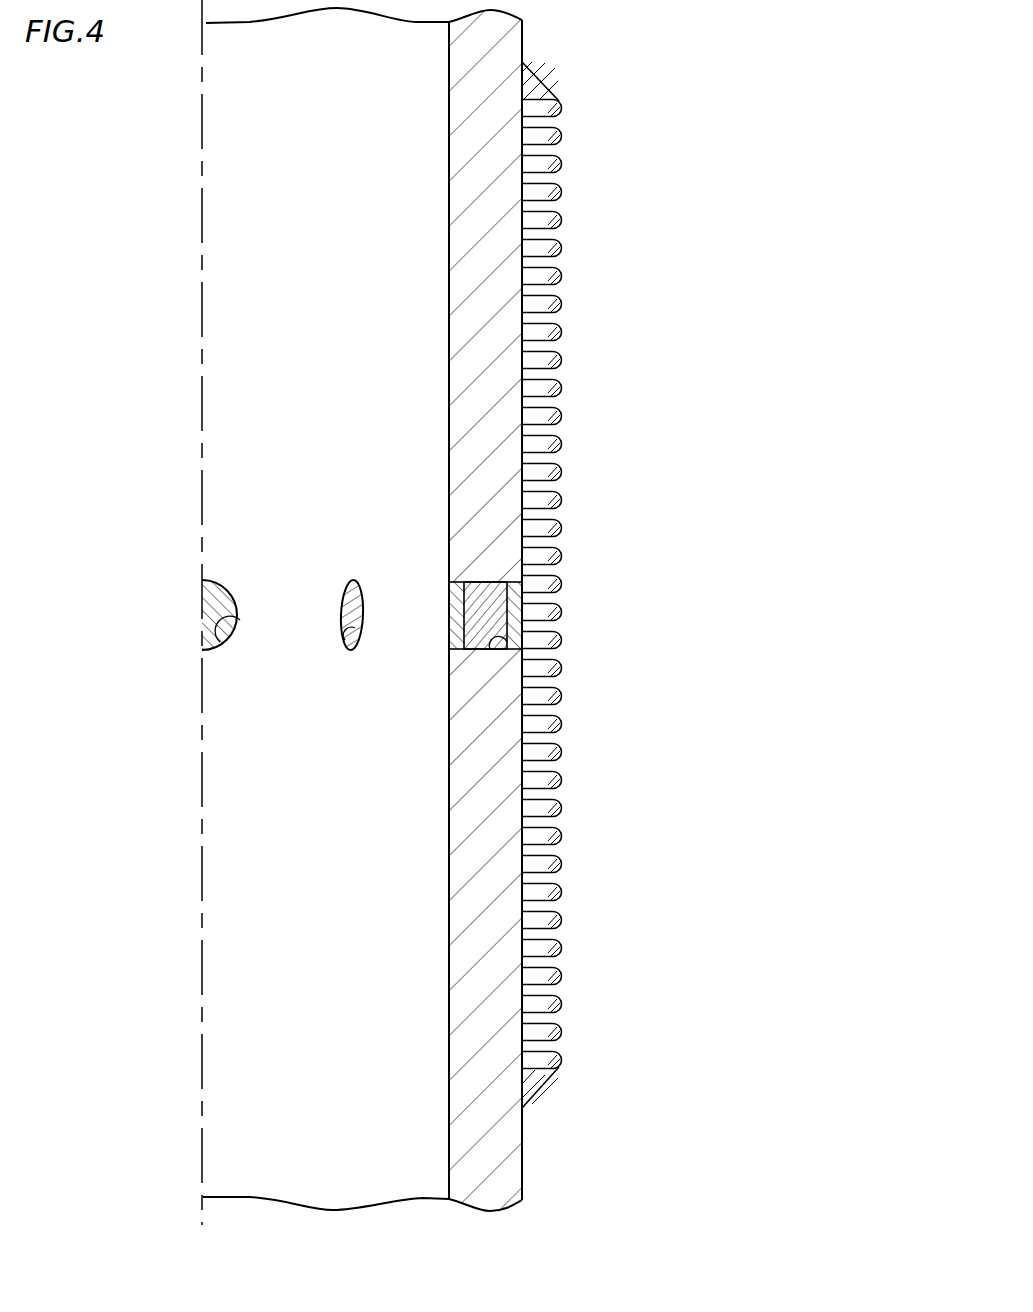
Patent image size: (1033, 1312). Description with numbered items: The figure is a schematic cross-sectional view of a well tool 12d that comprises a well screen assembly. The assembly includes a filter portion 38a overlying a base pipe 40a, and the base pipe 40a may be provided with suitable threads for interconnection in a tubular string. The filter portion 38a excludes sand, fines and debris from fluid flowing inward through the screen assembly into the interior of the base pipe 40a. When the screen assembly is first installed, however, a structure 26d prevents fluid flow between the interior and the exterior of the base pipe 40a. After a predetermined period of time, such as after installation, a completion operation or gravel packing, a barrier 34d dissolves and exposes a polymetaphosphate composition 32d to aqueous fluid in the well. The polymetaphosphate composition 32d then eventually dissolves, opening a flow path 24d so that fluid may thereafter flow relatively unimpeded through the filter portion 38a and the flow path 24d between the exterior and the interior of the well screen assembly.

The well tool 12d is at (634, 74).
The filter portion 38a is at (562, 252).
The polymetaphosphate composition 32d is at (481, 582).
The barrier 34d is at (522, 610).
The flow path 24d is at (497, 637).
The structure 26d is at (230, 576).
The base pipe 40a is at (522, 1152).